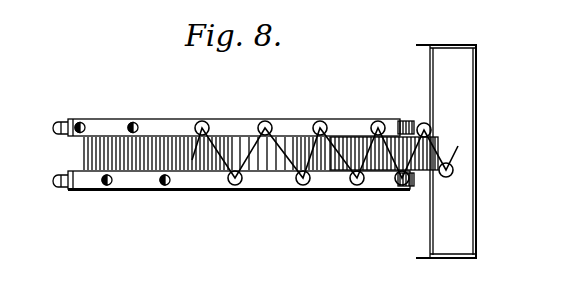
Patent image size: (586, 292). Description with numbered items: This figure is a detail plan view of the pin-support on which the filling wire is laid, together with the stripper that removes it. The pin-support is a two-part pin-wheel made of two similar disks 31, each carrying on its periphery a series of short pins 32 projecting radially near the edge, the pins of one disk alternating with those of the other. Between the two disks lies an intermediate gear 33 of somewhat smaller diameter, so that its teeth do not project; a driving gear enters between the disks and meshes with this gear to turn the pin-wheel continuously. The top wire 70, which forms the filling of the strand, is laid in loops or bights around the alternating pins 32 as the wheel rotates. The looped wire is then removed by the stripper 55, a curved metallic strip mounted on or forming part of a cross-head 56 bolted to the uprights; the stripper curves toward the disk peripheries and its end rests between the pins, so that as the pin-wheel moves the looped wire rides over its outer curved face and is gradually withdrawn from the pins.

The pin-wheel disk 31 is at (218, 125).
The pins 32 is at (270, 125).
The intermediate gear 33 is at (95, 150).
The top wire 70 is at (336, 150).
The stripper 55 is at (386, 188).
The cross-head 56 is at (463, 205).